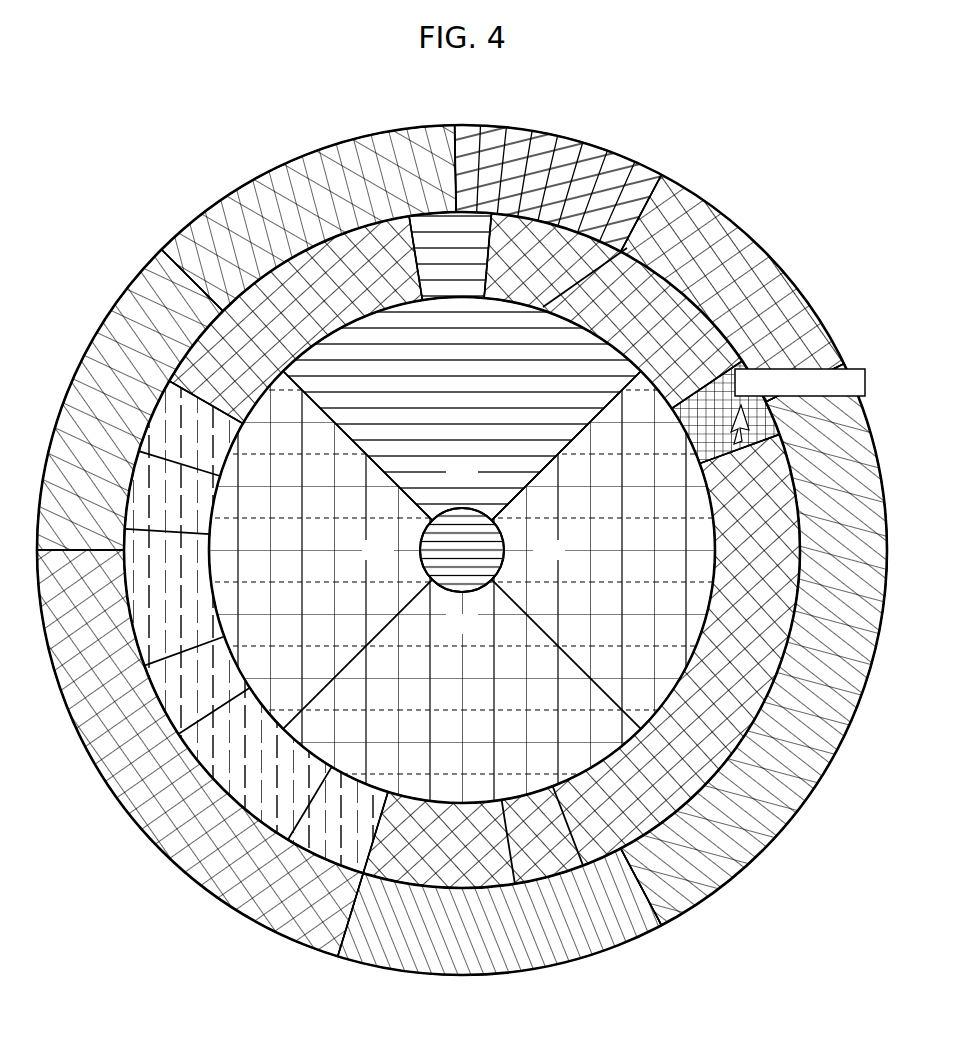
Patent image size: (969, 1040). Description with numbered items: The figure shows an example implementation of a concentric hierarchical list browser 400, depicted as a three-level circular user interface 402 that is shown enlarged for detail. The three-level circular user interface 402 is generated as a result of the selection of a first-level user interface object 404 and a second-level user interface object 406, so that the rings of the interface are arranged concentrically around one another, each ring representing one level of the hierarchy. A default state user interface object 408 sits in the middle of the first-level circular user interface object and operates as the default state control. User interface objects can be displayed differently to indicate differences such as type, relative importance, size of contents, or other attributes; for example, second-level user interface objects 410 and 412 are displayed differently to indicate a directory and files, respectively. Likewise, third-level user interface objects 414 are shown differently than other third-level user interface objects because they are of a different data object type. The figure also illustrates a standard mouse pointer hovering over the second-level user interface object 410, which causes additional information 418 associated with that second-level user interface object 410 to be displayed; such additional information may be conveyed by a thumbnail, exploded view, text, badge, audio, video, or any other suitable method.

The radial file system visualization 400 is at (204, 132).
The three-level circular user interface 402 is at (333, 130).
The first-level user interface object 404 is at (444, 417).
The second-level user interface object 406 is at (455, 292).
The default state user interface object 408 is at (412, 522).
The second-level user interface object 410 is at (690, 432).
The second-level user interface object 412 is at (245, 664).
The third-level user interface objects 414 is at (547, 130).
The additional information 418 is at (863, 368).